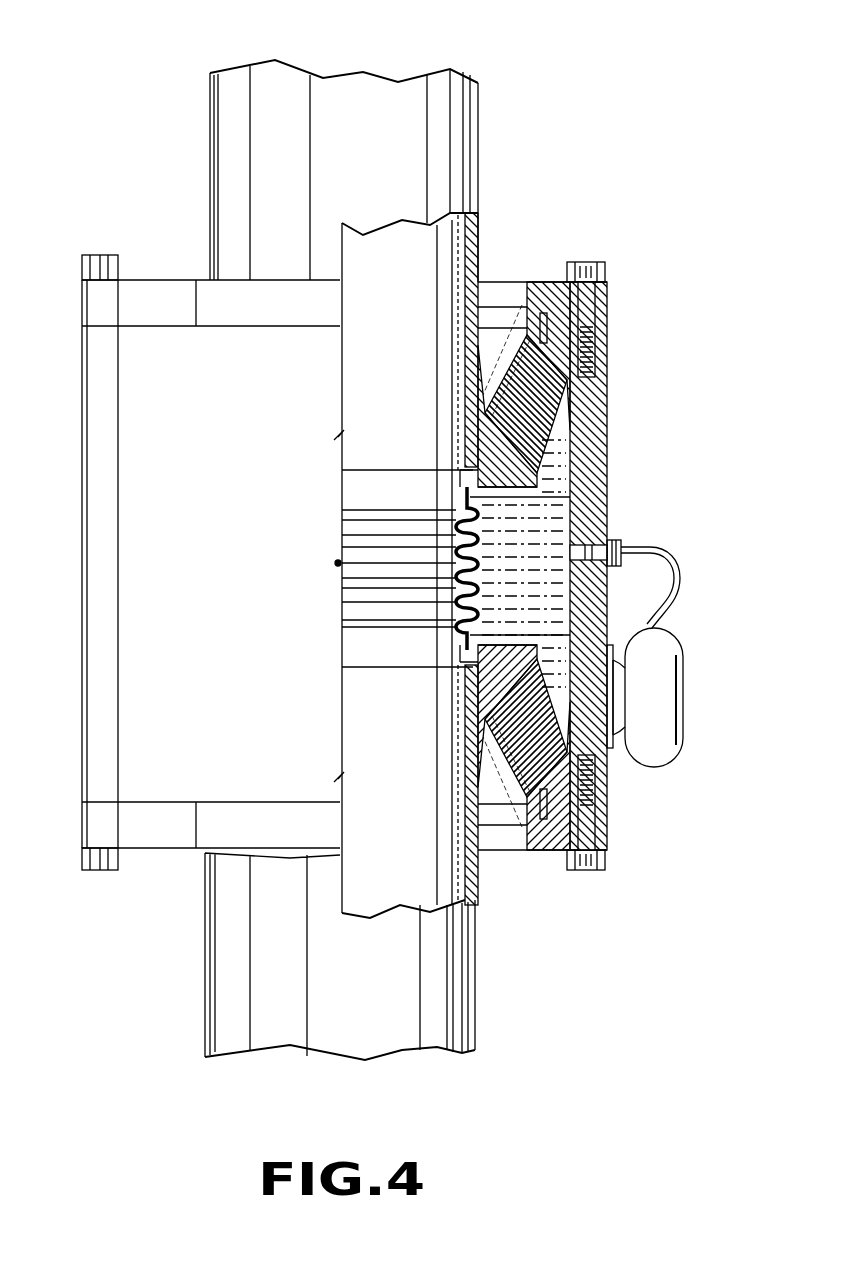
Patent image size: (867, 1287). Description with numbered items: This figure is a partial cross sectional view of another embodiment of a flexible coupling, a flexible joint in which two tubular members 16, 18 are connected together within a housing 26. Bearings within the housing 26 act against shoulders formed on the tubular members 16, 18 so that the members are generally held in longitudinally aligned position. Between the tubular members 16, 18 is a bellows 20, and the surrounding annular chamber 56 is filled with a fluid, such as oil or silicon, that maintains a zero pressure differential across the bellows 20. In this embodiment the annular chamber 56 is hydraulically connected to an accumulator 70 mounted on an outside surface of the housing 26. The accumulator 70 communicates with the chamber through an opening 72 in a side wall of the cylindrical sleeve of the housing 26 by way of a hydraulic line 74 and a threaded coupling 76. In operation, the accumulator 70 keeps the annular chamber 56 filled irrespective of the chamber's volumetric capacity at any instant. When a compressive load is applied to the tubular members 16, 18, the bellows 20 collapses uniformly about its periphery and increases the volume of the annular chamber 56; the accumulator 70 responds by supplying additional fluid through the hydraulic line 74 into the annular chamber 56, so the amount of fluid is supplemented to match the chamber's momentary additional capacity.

The tubular member 16 is at (480, 118).
The tubular member 18 is at (465, 1020).
The bellows 20 is at (455, 590).
The housing 26 is at (620, 347).
The annular chamber 56 is at (592, 522).
The opening 72 is at (538, 523).
The threaded coupling 76 is at (622, 548).
The hydraulic line 74 is at (680, 607).
The accumulator 70 is at (683, 705).